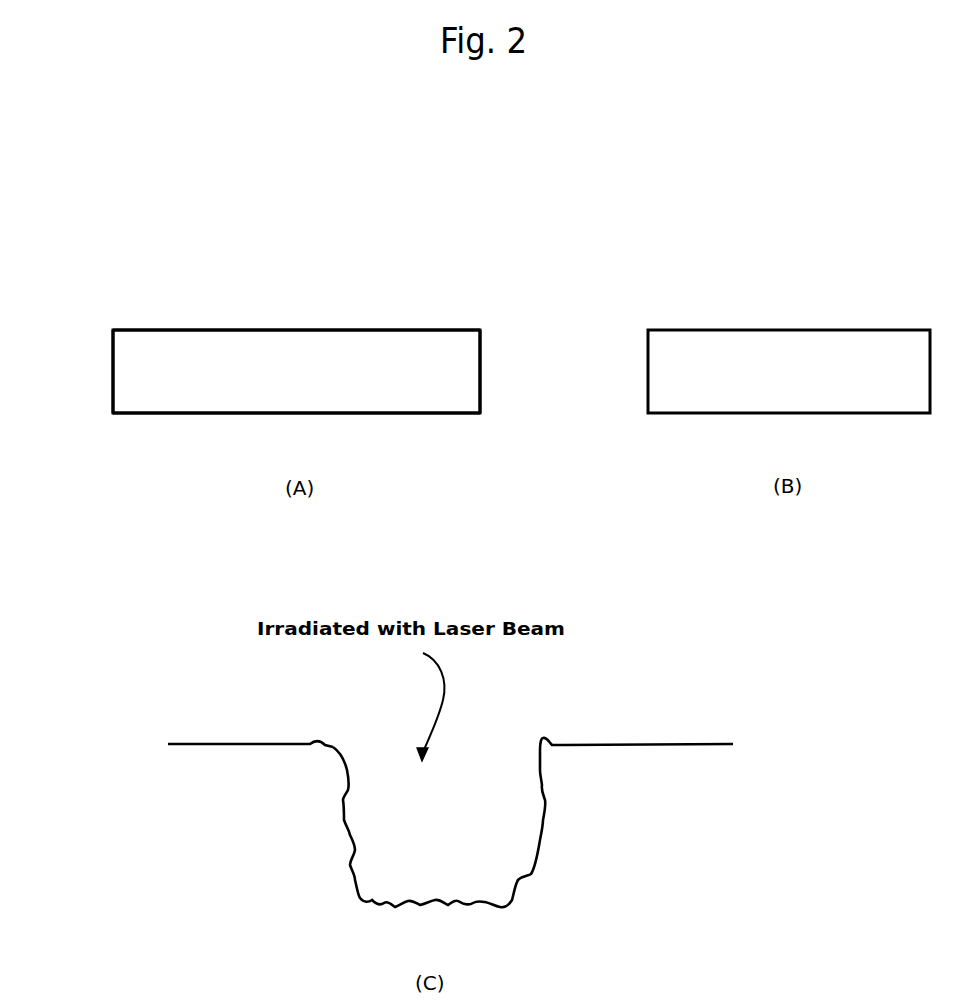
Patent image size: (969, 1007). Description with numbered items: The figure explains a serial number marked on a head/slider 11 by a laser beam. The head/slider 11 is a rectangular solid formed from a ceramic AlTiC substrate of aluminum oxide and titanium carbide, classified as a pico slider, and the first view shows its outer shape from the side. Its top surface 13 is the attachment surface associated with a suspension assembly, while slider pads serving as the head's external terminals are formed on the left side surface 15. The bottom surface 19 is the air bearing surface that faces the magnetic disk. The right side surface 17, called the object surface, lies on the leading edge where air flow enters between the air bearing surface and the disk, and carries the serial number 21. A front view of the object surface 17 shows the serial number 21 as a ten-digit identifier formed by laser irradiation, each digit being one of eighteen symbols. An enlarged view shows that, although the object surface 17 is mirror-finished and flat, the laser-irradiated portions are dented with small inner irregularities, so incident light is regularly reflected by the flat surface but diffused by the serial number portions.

The head/slider 11 is at (282, 304).
The top surface 13 is at (347, 330).
The left side surface 15 is at (113, 373).
The right side surface 17 is at (480, 372).
The bottom surface 19 is at (355, 413).
The serial number 21 is at (701, 395).